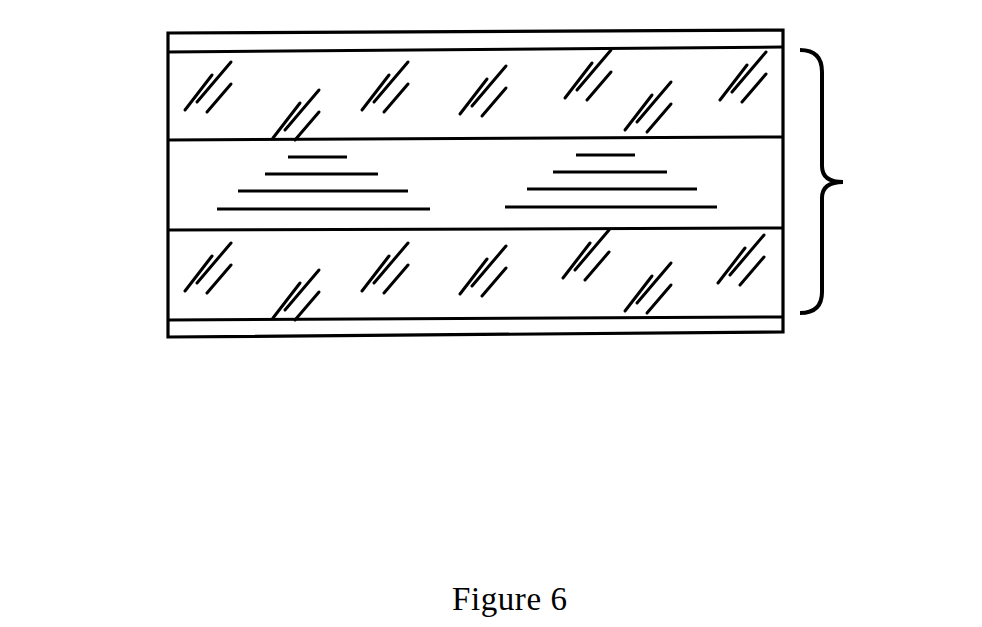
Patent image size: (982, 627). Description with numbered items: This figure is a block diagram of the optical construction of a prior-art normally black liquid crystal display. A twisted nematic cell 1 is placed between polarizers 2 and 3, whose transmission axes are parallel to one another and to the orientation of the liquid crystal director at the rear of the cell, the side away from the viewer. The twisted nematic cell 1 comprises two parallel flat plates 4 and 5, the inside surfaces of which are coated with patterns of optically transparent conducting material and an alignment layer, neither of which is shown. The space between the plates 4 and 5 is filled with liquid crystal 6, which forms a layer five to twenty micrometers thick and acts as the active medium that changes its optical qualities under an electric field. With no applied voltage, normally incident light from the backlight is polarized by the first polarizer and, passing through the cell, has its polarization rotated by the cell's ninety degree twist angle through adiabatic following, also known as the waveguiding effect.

The twisted nematic cell 1 is at (529, 183).
The polarizer 2 is at (768, 38).
The polarizer 3 is at (767, 325).
The flat plate 4 is at (183, 73).
The flat plate 5 is at (183, 257).
The liquid crystal 6 is at (185, 178).